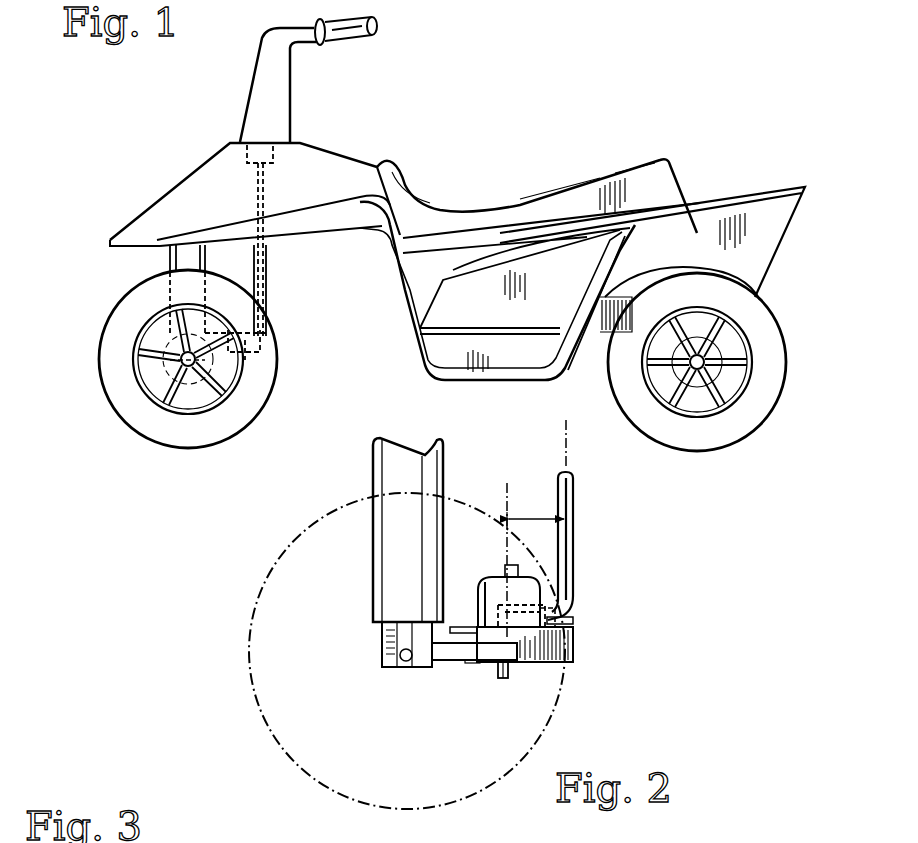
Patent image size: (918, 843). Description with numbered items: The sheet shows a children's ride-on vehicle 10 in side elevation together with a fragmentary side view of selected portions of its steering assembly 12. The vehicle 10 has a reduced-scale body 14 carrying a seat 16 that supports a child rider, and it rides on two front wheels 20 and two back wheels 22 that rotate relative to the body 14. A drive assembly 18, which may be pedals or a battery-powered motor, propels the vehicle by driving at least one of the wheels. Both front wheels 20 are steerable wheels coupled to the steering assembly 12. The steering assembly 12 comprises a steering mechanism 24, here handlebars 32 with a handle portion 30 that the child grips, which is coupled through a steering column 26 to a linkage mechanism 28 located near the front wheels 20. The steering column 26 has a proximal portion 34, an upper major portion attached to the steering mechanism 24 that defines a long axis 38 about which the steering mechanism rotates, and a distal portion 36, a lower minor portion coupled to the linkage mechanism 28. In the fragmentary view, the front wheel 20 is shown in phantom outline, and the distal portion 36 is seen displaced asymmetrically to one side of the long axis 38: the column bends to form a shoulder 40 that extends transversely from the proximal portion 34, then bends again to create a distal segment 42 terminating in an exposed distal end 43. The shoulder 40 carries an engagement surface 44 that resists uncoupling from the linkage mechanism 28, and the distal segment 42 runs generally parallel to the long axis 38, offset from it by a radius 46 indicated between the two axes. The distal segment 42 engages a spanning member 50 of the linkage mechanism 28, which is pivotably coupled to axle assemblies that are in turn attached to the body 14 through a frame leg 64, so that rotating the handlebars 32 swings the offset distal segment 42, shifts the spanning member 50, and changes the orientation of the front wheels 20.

In FIG. 1, the children's ride-on vehicle 10 is at (80, 118).
In FIG. 2, the children's ride-on vehicle 10 is at (213, 582).
In FIG. 1, the steering assembly 12 is at (339, 337).
In FIG. 2, the steering assembly 12 is at (638, 610).
In FIG. 1, the body 14 is at (779, 238).
In FIG. 1, the seat 16 is at (610, 176).
In FIG. 1, the drive assembly 18 is at (592, 350).
In FIG. 1, the front wheels 20 is at (100, 338).
In FIG. 2, the front wheels 20 is at (250, 663).
In FIG. 1, the back wheels 22 is at (777, 315).
In FIG. 1, the steering mechanism 24 is at (292, 73).
In FIG. 1, the steering column 26 is at (293, 241).
In FIG. 2, the steering column 26 is at (586, 530).
In FIG. 1, the linkage mechanism 28 is at (249, 368).
In FIG. 2, the linkage mechanism 28 is at (455, 674).
In FIG. 1, the handle portion 30 is at (346, 38).
In FIG. 1, the handlebars 32 is at (299, 33).
In FIG. 1, the proximal portion 34 is at (269, 273).
In FIG. 2, the proximal portion 34 is at (578, 527).
In FIG. 1, the distal portion 36 is at (249, 344).
In FIG. 2, the distal portion 36 is at (557, 623).
In FIG. 2, the long axis 38 is at (568, 460).
In FIG. 2, the shoulder 40 is at (520, 600).
In FIG. 2, the distal segment 42 is at (533, 666).
In FIG. 2, the distal end 43 is at (505, 676).
In FIG. 2, the engagement surface 44 is at (552, 589).
In FIG. 2, the radius 46 is at (533, 519).
In FIG. 2, the spanning member 50 is at (562, 669).
In FIG. 1, the frame leg 64 is at (170, 259).
In FIG. 2, the frame leg 64 is at (390, 566).